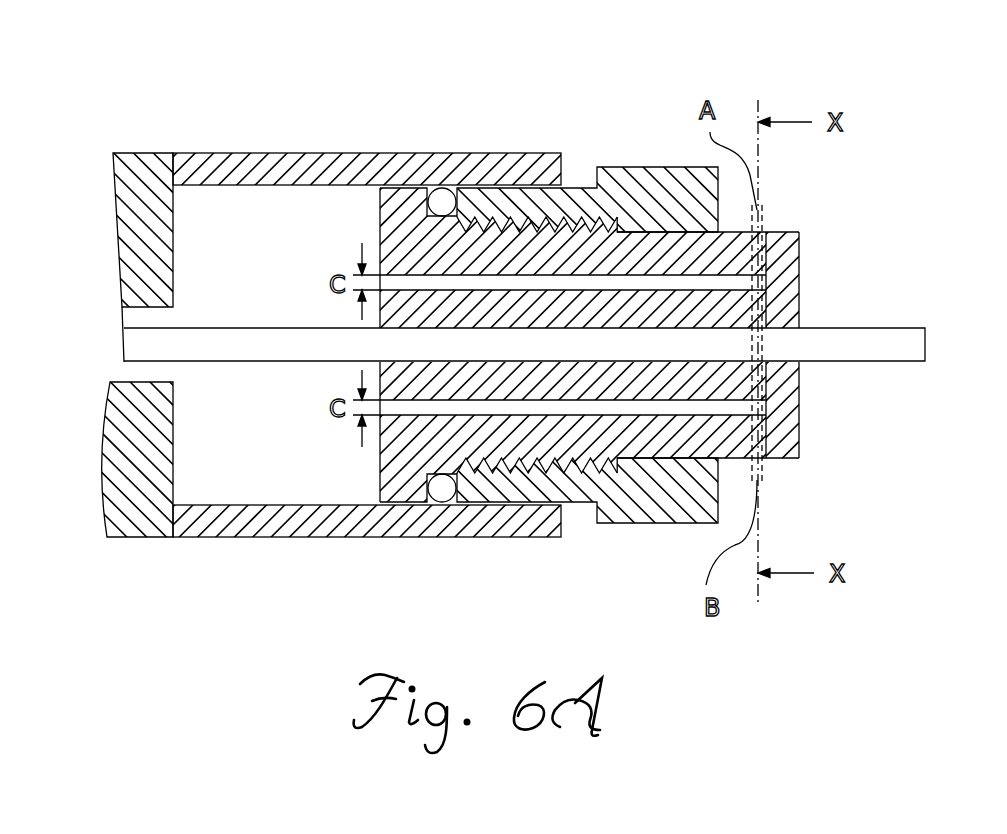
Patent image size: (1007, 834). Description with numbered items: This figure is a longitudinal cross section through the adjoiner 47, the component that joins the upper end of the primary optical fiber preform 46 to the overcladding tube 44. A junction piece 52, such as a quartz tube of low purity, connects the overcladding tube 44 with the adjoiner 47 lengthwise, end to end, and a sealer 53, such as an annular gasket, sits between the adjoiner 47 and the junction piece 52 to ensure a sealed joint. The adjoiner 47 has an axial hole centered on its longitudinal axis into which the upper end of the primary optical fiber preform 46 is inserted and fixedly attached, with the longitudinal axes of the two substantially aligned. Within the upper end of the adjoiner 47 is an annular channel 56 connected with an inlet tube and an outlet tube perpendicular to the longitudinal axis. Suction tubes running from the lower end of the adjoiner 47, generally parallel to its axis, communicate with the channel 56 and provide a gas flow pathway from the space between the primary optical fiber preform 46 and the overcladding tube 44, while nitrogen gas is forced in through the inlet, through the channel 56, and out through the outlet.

The overcladding tube 44 is at (130, 228).
The primary optical fiber preform 46 is at (242, 338).
The junction piece 52 is at (333, 168).
The sealer 53 is at (442, 200).
The adjoiner 47 is at (638, 130).
The annular channel 56 is at (762, 326).